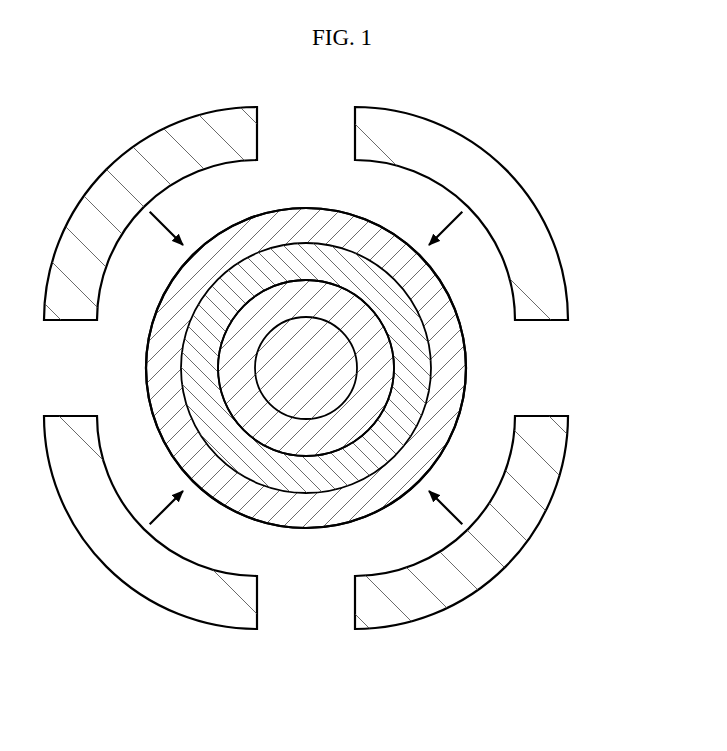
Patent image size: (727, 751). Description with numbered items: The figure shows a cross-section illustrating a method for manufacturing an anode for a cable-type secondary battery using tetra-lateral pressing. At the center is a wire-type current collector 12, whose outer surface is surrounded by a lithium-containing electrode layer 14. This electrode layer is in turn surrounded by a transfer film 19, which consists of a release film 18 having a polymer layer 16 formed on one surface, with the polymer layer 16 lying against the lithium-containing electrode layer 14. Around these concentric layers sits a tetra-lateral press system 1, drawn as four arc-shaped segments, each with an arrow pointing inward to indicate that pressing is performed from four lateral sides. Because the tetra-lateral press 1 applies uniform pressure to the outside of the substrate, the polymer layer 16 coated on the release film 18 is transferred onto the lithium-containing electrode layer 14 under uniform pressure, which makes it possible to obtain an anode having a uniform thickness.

The tetra-lateral press system 1 is at (480, 162).
The wire-type current collector 12 is at (300, 338).
The lithium-containing electrode layer 14 is at (318, 298).
The polymer layer 16 is at (412, 345).
The release film 18 is at (447, 385).
The transfer film 19 is at (610, 333).